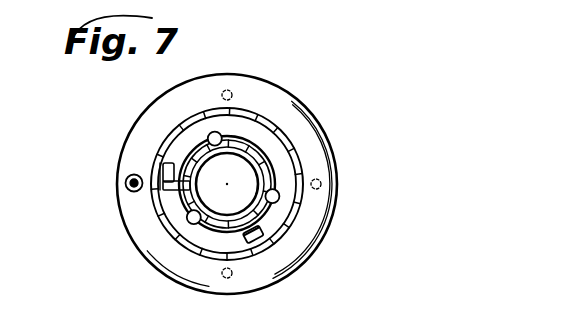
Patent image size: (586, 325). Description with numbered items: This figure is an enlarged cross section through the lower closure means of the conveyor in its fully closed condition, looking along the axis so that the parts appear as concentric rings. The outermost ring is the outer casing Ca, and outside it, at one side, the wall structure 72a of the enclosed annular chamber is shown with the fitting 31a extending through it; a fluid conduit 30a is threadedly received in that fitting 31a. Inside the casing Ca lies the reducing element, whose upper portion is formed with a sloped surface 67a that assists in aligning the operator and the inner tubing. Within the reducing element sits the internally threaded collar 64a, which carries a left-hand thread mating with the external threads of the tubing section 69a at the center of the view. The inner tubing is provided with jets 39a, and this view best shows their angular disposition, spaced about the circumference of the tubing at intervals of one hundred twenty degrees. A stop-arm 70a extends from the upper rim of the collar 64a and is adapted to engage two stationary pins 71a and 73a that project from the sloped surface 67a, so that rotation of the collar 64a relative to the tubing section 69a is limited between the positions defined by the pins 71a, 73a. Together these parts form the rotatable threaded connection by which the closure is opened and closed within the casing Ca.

The outer casing Ca is at (303, 150).
The wall structure 72a is at (305, 250).
The tubing section 69a is at (294, 222).
The sloped surface 67a is at (283, 173).
The stop-arm 70a is at (128, 193).
The collar 64a is at (322, 187).
The jets 39a is at (208, 135).
The stationary pin 71a is at (163, 167).
The fluid conduit 30a is at (125, 183).
The fitting 31a is at (128, 178).
The stationary pin 73a is at (254, 240).